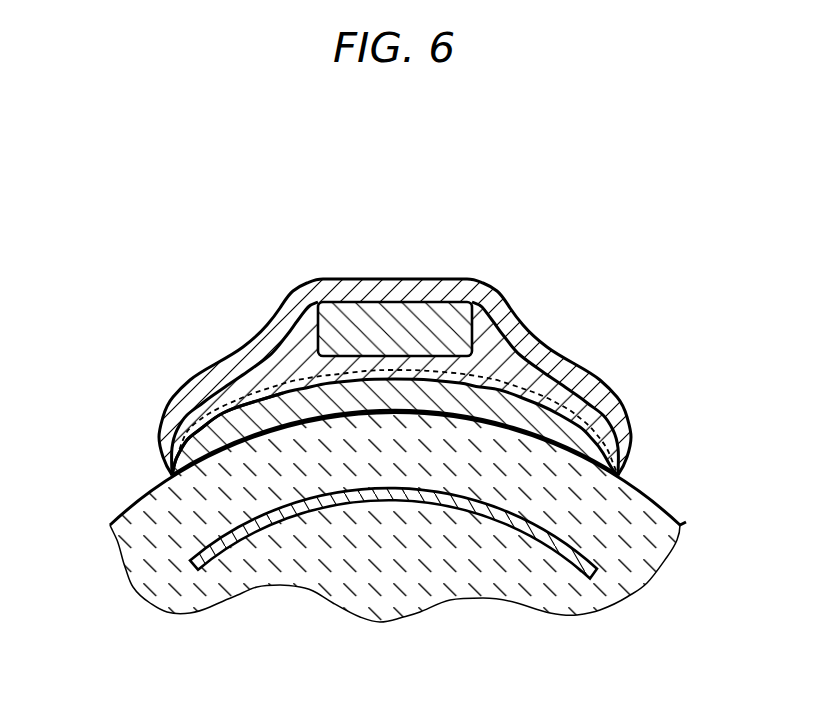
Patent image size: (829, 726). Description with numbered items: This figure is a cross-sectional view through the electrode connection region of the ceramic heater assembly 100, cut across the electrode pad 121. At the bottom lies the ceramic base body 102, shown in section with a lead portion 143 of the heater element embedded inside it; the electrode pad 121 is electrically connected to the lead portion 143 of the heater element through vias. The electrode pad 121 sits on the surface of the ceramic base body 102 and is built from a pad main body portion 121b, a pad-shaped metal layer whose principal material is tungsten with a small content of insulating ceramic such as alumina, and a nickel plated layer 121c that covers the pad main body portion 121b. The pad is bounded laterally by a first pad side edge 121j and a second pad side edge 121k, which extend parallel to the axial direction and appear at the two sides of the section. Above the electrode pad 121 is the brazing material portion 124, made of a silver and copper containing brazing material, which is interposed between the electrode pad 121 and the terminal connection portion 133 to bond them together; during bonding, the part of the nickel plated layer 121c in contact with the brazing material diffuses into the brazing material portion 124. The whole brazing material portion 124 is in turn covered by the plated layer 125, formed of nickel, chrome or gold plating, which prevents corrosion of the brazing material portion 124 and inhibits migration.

The input device 100 is at (385, 311).
The ceramic base body 102 is at (400, 538).
The electrode pad 121 is at (568, 427).
The pad main body portion 121b is at (227, 433).
The nickel plated layer 121c is at (257, 389).
The first pad side edge 121j is at (170, 474).
The second pad side edge 121k is at (619, 475).
The brazing material portion 124 is at (565, 366).
The plated layer 125 is at (522, 322).
The terminal connection portion 133 is at (377, 307).
The lead portion 143 is at (243, 529).